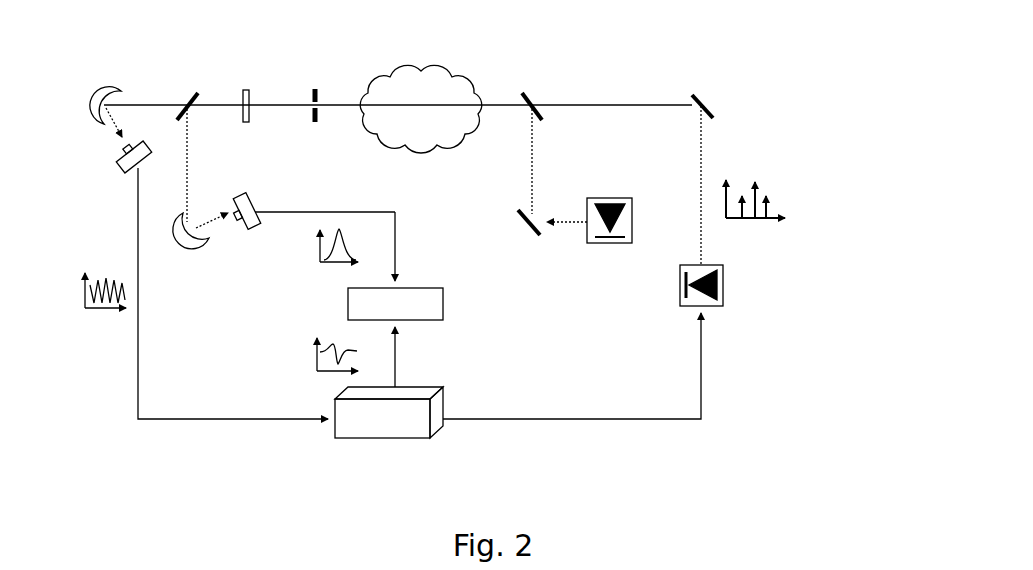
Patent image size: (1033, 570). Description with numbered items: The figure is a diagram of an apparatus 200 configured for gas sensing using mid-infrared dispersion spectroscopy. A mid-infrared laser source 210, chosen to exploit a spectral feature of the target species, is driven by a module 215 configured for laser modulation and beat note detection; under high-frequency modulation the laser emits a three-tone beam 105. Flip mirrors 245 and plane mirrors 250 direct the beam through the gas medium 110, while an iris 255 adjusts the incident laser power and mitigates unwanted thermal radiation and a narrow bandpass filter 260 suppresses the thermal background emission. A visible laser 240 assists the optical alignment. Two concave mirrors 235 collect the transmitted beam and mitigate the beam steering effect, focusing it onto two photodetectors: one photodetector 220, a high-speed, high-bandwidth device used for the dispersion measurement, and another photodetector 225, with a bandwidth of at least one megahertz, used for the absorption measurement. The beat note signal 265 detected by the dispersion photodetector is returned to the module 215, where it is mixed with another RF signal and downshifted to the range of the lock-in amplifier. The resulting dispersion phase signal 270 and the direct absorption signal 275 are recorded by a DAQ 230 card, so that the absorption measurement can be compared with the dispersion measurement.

The apparatus 200 is at (773, 450).
The three-tone beam 105 is at (783, 205).
The gas medium 110 is at (438, 67).
The mid-infrared laser source 210 is at (730, 288).
The module 215 is at (453, 402).
The photodetector 220 is at (124, 170).
The photodetector 225 is at (254, 194).
The DAQ 230 is at (450, 317).
The concave mirror 235 is at (104, 84).
The visible laser 240 is at (607, 255).
The flip mirror 245 is at (199, 90).
The plane mirror 250 is at (718, 100).
The iris 255 is at (314, 84).
The narrow bandpass filter 260 is at (247, 84).
The beat note signal 265 is at (103, 313).
The dispersion phase signal 270 is at (312, 257).
The direct absorption signal 275 is at (313, 363).